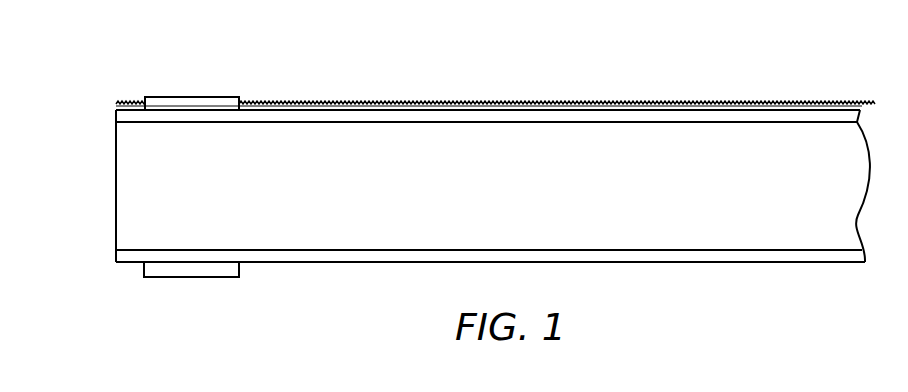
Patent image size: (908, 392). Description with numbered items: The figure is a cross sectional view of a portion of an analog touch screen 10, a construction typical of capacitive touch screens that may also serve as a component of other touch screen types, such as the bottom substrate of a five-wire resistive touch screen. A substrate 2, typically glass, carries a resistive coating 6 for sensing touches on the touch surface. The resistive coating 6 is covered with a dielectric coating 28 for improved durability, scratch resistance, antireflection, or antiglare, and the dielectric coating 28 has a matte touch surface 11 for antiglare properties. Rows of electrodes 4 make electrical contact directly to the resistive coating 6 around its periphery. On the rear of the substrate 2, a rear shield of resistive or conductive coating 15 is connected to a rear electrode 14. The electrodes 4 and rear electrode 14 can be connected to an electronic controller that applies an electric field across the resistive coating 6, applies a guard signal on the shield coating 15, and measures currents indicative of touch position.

The analog touch screen 10 is at (577, 58).
The substrate 2 is at (725, 224).
The electrodes 4 is at (202, 104).
The resistive coating 6 is at (667, 118).
The matte touch surface 11 is at (394, 101).
The dielectric coating 28 is at (523, 107).
The rear electrode 14 is at (196, 268).
The rear shield coating 15 is at (366, 256).